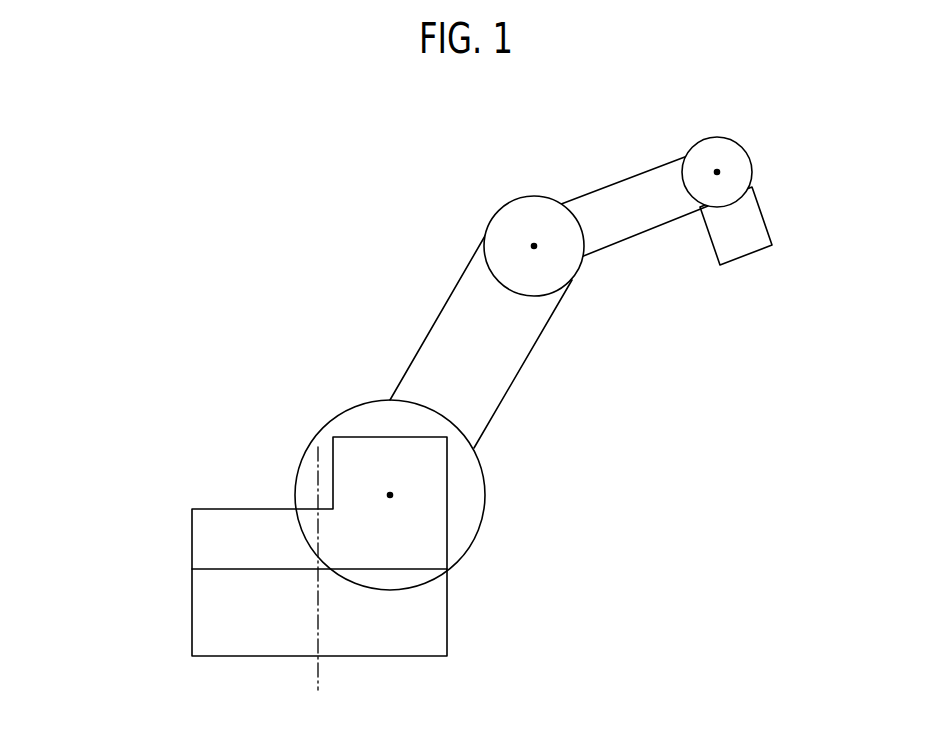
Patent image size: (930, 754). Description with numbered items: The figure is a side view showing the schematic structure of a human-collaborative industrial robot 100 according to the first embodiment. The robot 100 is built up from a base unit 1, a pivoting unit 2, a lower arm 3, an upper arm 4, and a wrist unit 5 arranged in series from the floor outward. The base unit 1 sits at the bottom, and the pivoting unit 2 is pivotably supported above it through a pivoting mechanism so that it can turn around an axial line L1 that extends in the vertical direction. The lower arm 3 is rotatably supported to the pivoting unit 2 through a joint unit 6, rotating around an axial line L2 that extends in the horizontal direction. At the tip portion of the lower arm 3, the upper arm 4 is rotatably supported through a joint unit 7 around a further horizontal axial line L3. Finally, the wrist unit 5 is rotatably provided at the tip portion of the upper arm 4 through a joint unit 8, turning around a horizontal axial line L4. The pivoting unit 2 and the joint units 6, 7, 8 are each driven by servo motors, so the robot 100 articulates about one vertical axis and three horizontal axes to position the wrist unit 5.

The human-collaborative industrial robot 100 is at (300, 196).
The base unit 1 is at (192, 612).
The pivoting unit 2 is at (192, 533).
The lower arm 3 is at (525, 363).
The upper arm 4 is at (635, 240).
The wrist unit 5 is at (767, 212).
The joint unit 6 is at (485, 495).
The joint unit 7 is at (533, 196).
The joint unit 8 is at (742, 138).
The axial line L1 is at (318, 588).
The axial line L2 is at (391, 512).
The axial line L3 is at (534, 264).
The axial line L4 is at (717, 188).